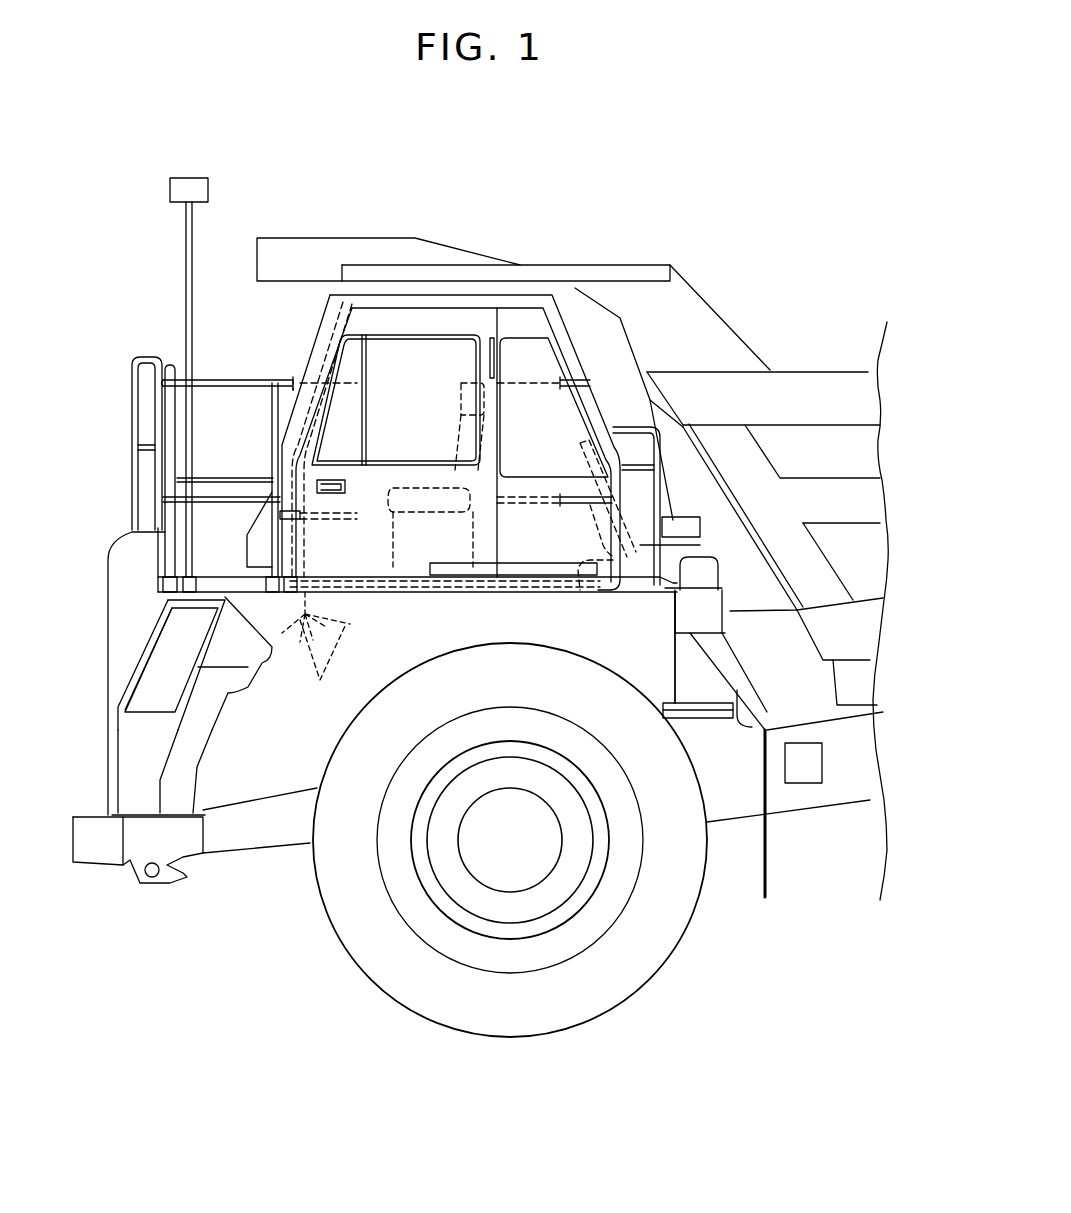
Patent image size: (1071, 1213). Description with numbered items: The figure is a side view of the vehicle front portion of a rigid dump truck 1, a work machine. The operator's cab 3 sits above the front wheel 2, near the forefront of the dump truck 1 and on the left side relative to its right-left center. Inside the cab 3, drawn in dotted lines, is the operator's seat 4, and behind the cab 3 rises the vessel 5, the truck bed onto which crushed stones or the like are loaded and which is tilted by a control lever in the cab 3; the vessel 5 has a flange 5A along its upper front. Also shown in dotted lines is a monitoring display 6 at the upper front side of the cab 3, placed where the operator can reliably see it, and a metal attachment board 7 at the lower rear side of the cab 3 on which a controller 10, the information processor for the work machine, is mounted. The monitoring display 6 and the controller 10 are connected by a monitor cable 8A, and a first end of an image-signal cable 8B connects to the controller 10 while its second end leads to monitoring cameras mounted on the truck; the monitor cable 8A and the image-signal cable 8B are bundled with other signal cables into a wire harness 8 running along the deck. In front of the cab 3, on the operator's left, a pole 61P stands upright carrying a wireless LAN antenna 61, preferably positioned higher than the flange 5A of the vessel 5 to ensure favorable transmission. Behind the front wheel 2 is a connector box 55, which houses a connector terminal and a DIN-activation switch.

The dump truck 1 is at (722, 200).
The front wheel 2 is at (622, 990).
The cab 3 is at (530, 308).
The operator's seat 4 is at (460, 437).
The vessel 5 is at (818, 380).
The flange 5A is at (320, 242).
The monitoring display 6 is at (320, 335).
The attachment board 7 is at (582, 458).
The wire harness 8 is at (405, 597).
The monitor cable 8A is at (314, 538).
The image-signal cable 8B is at (316, 648).
The controller 10 is at (594, 534).
The connector box 55 is at (800, 788).
The antenna 61 is at (208, 188).
The pole 61P is at (183, 262).